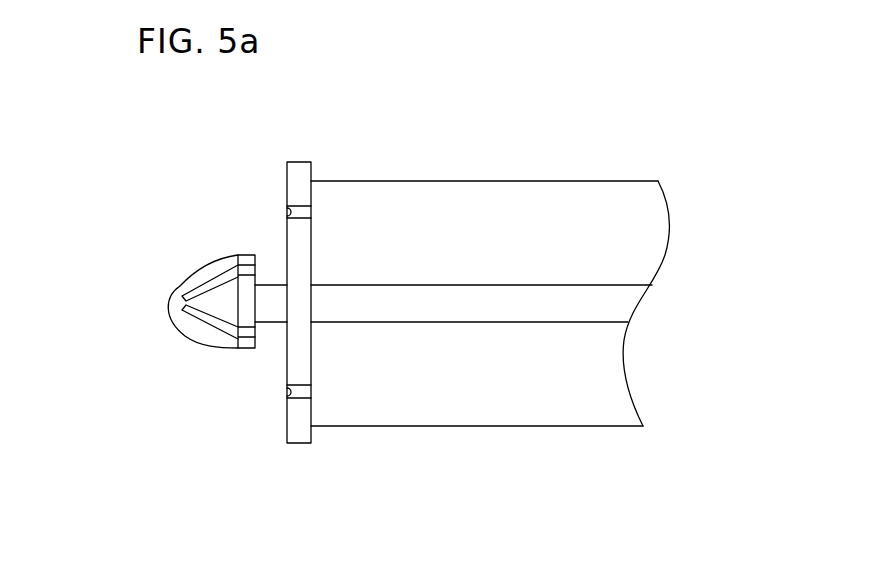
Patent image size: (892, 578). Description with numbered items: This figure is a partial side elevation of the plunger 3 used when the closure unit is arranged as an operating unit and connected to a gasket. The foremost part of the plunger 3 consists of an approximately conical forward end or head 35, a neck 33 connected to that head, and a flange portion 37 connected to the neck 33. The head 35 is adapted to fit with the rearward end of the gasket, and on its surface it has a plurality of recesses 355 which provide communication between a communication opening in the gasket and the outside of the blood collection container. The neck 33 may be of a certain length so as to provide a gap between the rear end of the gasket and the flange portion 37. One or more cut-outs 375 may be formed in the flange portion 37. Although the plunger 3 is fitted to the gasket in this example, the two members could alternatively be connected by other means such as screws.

The plunger 3 is at (515, 173).
The neck 33 is at (268, 283).
The head 35 is at (161, 307).
The recesses 355 is at (202, 322).
The flange portion 37 is at (293, 437).
The cut-outs 375 is at (302, 395).